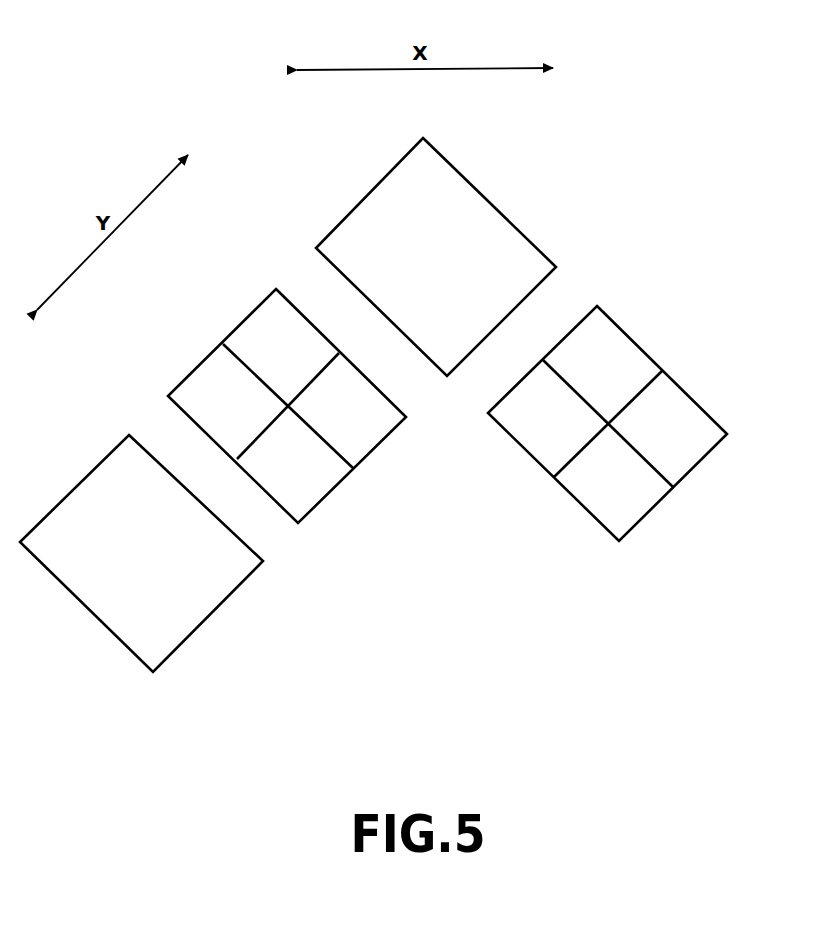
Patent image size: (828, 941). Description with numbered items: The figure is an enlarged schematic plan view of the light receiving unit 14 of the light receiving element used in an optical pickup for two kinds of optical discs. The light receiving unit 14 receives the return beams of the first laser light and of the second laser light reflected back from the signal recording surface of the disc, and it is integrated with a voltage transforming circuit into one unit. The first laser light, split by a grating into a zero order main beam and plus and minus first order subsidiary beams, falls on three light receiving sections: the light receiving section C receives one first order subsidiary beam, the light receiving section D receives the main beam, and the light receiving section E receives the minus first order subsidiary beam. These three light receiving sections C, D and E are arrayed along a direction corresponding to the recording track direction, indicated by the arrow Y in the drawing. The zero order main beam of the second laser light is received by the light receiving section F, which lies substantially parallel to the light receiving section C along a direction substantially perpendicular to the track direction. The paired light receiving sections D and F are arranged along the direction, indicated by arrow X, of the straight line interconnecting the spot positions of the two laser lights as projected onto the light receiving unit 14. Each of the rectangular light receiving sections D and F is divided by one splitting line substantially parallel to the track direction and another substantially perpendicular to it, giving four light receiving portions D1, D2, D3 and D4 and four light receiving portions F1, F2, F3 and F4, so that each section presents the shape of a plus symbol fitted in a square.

The light receiving unit 14 is at (236, 111).
The light receiving section C is at (362, 197).
The light receiving section D is at (374, 480).
The light receiving portion D1 is at (247, 313).
The light receiving portion D2 is at (192, 370).
The light receiving portion D3 is at (327, 500).
The light receiving portion D4 is at (377, 447).
The light receiving section E is at (73, 489).
The light receiving section F is at (685, 499).
The light receiving portion F1 is at (633, 337).
The light receiving portion F2 is at (535, 462).
The light receiving portion F3 is at (590, 517).
The light receiving portion F4 is at (707, 408).